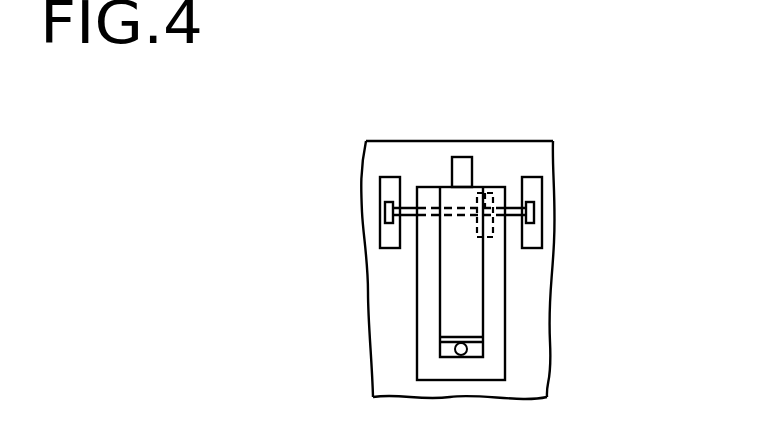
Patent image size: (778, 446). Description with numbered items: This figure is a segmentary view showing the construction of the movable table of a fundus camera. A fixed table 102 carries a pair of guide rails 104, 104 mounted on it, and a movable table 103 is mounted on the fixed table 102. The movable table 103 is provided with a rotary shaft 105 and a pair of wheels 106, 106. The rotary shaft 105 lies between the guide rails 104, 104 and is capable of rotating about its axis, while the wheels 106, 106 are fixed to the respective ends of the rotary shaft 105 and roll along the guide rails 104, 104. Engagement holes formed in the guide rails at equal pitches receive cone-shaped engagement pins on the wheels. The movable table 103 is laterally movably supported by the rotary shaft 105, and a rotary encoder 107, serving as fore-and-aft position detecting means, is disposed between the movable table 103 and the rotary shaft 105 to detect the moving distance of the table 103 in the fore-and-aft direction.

The table 102 is at (557, 153).
The movable table 103 is at (505, 338).
The guide rails 104 is at (378, 234).
The rotary shaft 105 is at (412, 203).
The wheels 106 is at (385, 217).
The rotary encoder 107 is at (487, 193).